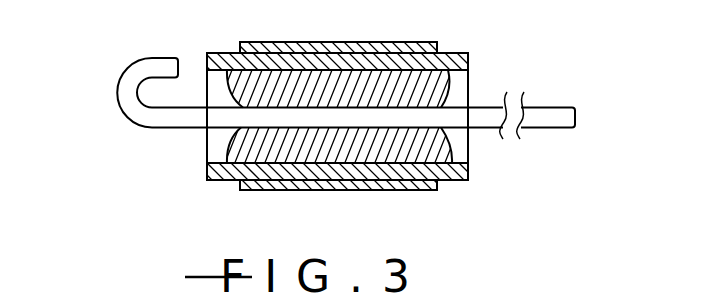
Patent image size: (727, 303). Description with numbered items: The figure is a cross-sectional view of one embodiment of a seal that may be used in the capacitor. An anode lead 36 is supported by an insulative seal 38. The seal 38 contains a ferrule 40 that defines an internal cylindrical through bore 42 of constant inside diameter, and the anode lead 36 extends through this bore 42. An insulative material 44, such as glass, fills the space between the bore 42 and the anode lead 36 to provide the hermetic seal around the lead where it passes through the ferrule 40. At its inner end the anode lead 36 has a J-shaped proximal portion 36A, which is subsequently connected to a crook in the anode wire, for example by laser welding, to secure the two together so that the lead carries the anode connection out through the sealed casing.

The anode lead 36 is at (560, 112).
The J-shaped proximal portion 36A is at (119, 96).
The insulative seal 38 is at (580, 51).
The ferrule 40 is at (407, 190).
The through bore 42 is at (467, 155).
The insulative material 44 is at (446, 85).